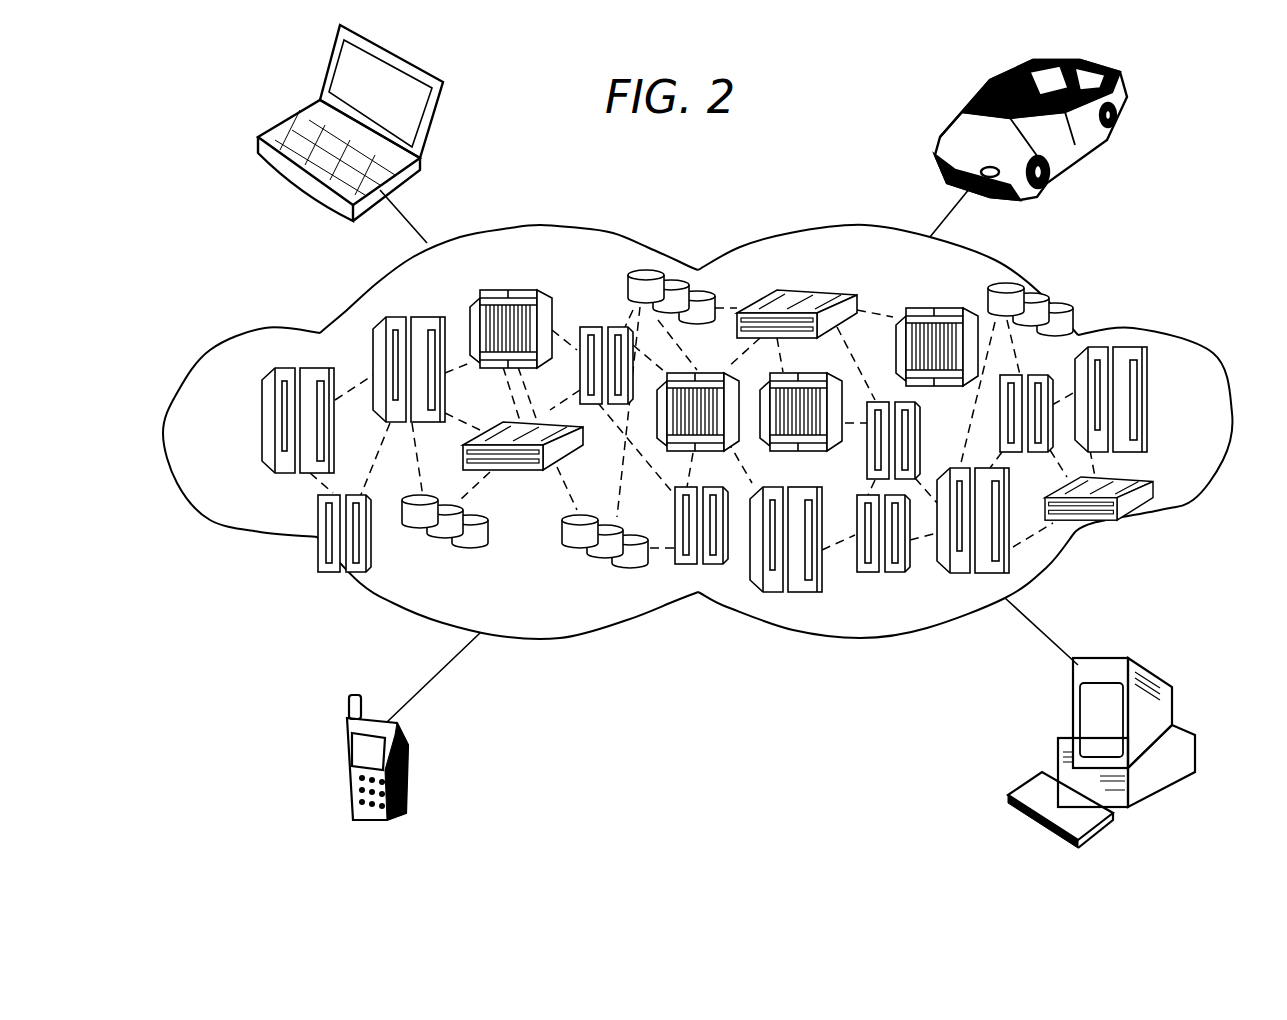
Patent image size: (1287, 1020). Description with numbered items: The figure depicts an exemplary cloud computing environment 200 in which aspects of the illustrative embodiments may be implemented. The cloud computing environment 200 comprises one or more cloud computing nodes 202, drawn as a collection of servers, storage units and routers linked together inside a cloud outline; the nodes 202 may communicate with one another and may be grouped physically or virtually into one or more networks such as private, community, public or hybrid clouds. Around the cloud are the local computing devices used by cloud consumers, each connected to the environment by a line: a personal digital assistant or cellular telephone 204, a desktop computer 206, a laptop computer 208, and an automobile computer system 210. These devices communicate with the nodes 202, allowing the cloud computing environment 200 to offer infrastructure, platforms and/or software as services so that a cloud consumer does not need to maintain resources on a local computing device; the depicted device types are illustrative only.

The cloud computing environment 200 is at (1183, 338).
The cloud computing nodes 202 is at (1133, 512).
The personal digital assistant (PDA) or cellular telephone 204 is at (408, 728).
The desktop computer 206 is at (1065, 722).
The laptop computer 208 is at (300, 108).
The automobile computer system 210 is at (955, 118).